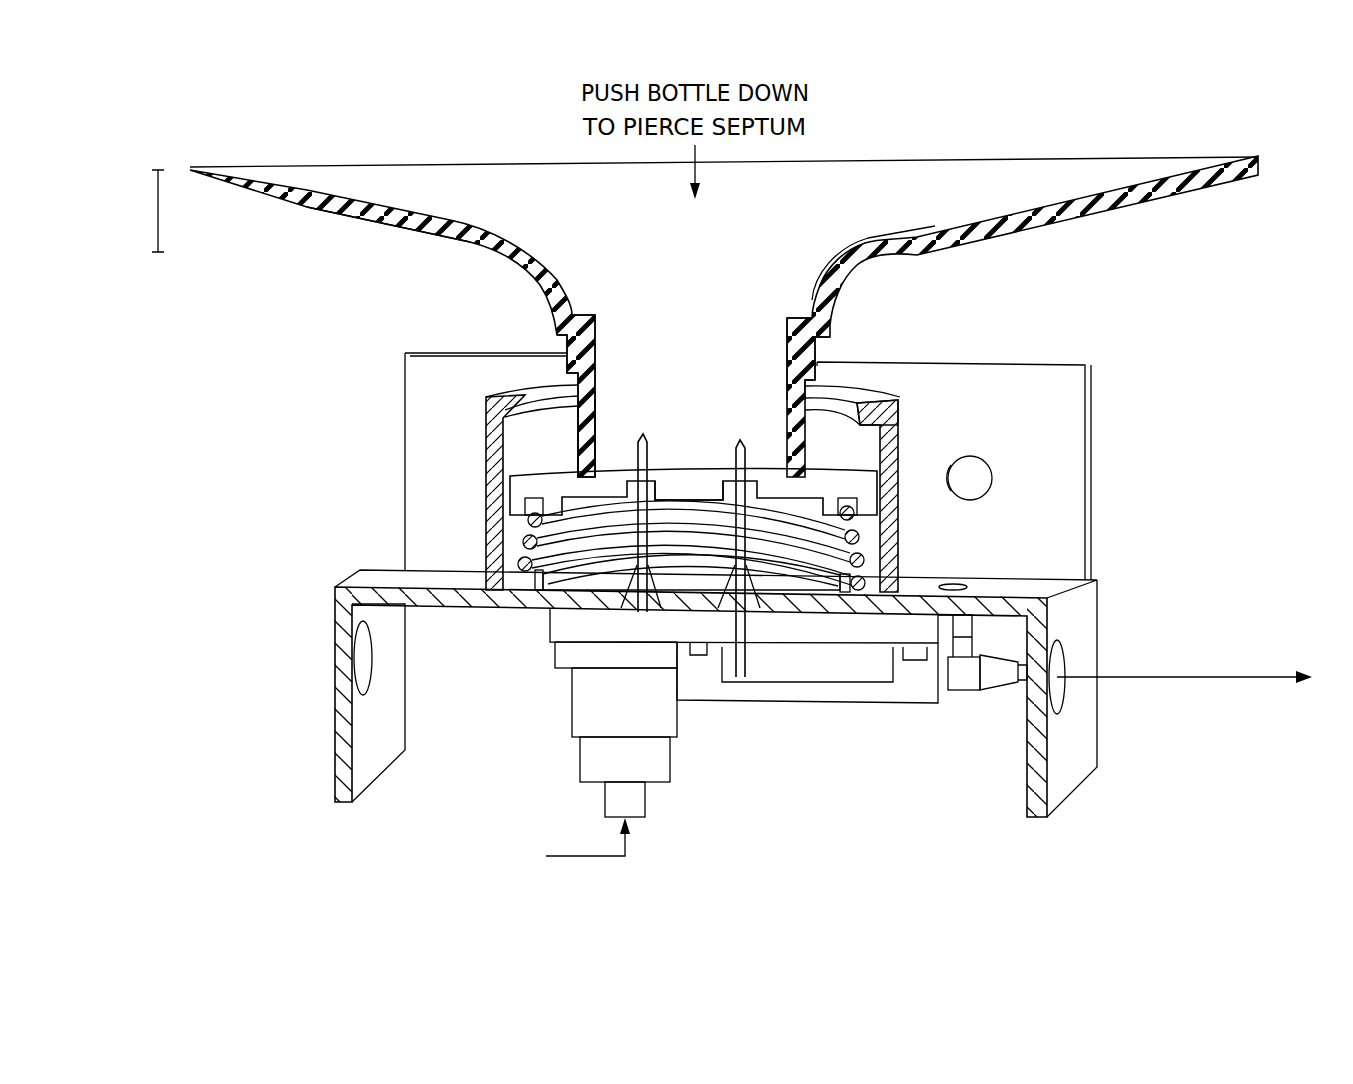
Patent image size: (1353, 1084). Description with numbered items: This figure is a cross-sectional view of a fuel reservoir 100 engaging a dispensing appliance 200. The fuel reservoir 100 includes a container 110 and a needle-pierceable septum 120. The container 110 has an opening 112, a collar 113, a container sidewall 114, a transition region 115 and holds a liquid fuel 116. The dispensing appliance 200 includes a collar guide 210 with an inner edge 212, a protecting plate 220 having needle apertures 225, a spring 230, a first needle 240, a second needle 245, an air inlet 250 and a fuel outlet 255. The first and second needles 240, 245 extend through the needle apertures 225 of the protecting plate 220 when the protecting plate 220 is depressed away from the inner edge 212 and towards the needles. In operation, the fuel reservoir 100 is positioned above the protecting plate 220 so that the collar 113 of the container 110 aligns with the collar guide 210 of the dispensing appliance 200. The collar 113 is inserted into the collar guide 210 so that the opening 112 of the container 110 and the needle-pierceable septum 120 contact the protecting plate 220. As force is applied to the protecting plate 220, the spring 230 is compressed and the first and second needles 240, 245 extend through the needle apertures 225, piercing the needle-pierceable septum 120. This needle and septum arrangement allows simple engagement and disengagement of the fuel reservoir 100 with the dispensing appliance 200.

The fuel reservoir 100 is at (1233, 228).
The container 110 is at (1112, 208).
The opening 112 is at (580, 457).
The collar 113 is at (816, 353).
The container sidewall 114 is at (328, 192).
The transition region 115 is at (158, 218).
The liquid fuel 116 is at (395, 210).
The needle-pierceable septum 120 is at (617, 470).
The dispensing appliance 200 is at (1133, 552).
The collar guide 210 is at (493, 427).
The inner edge 212 is at (862, 405).
The protecting plate 220 is at (527, 485).
The needle apertures 225 is at (757, 495).
The spring 230 is at (530, 542).
The first needle 240 is at (650, 570).
The second needle 245 is at (747, 572).
The air inlet 250 is at (632, 802).
The fuel outlet 255 is at (970, 680).